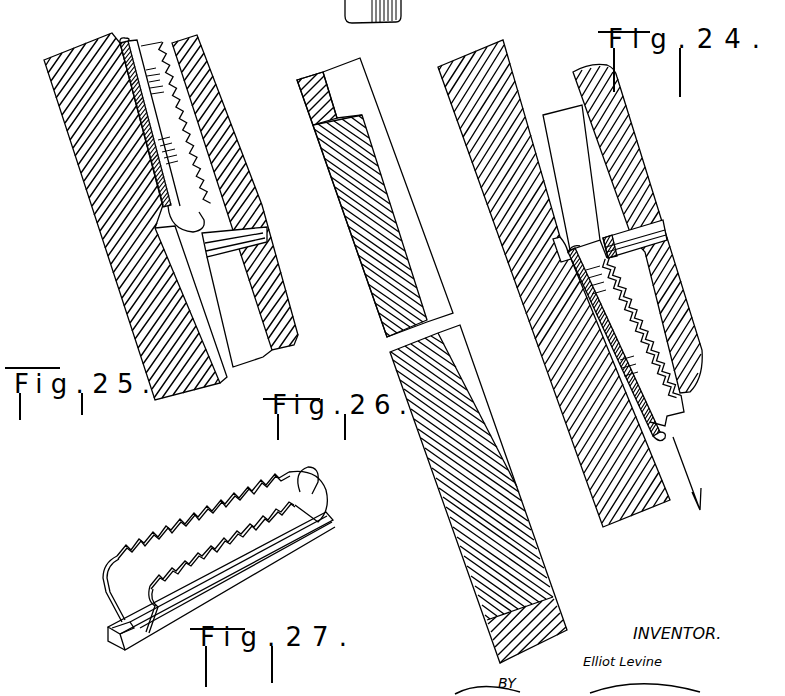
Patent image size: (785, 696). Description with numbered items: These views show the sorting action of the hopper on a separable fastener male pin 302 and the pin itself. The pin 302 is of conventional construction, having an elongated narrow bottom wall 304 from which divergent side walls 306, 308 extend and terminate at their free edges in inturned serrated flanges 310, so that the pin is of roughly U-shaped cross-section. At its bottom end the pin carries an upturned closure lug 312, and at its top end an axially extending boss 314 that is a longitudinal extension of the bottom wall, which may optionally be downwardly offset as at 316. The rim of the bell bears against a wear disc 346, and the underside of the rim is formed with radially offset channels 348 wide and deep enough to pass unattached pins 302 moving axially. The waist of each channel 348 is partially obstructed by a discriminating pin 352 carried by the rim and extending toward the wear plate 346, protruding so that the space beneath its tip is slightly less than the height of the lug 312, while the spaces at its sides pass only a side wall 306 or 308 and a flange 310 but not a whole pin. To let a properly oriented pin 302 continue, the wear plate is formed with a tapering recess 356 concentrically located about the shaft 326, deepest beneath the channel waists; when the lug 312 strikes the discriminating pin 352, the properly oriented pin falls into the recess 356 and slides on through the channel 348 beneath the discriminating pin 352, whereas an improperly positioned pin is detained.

In FIG. 27, the pin 302 is at (202, 507).
In FIG. 25, the bottom wall 304 is at (163, 186).
In FIG. 27, the bottom wall 304 is at (270, 556).
In FIG. 27, the side wall 306 is at (103, 597).
In FIG. 27, the side wall 308 is at (223, 568).
In FIG. 27, the inturned serrated flange 310 is at (133, 550).
In FIG. 25, the upturned closure lug 312 is at (176, 216).
In FIG. 24, the upturned closure lug 312 is at (583, 240).
In FIG. 27, the upturned closure lug 312 is at (308, 473).
In FIG. 27, the boss 314 is at (107, 638).
In FIG. 25, the downward offset 316 is at (133, 88).
In FIG. 27, the downward offset 316 is at (200, 604).
In FIG. 26, the shaft 326 is at (345, 10).
In FIG. 25, the wear disc 346 is at (102, 216).
In FIG. 26, the wear disc 346 is at (475, 568).
In FIG. 24, the wear disc 346 is at (580, 451).
In FIG. 25, the channel 348 is at (260, 305).
In FIG. 24, the channel 348 is at (608, 186).
In FIG. 25, the discriminating pin 352 is at (248, 242).
In FIG. 24, the discriminating pin 352 is at (660, 232).
In FIG. 25, the recess 356 is at (177, 276).
In FIG. 26, the recess 356 is at (423, 245).
In FIG. 24, the recess 356 is at (592, 312).